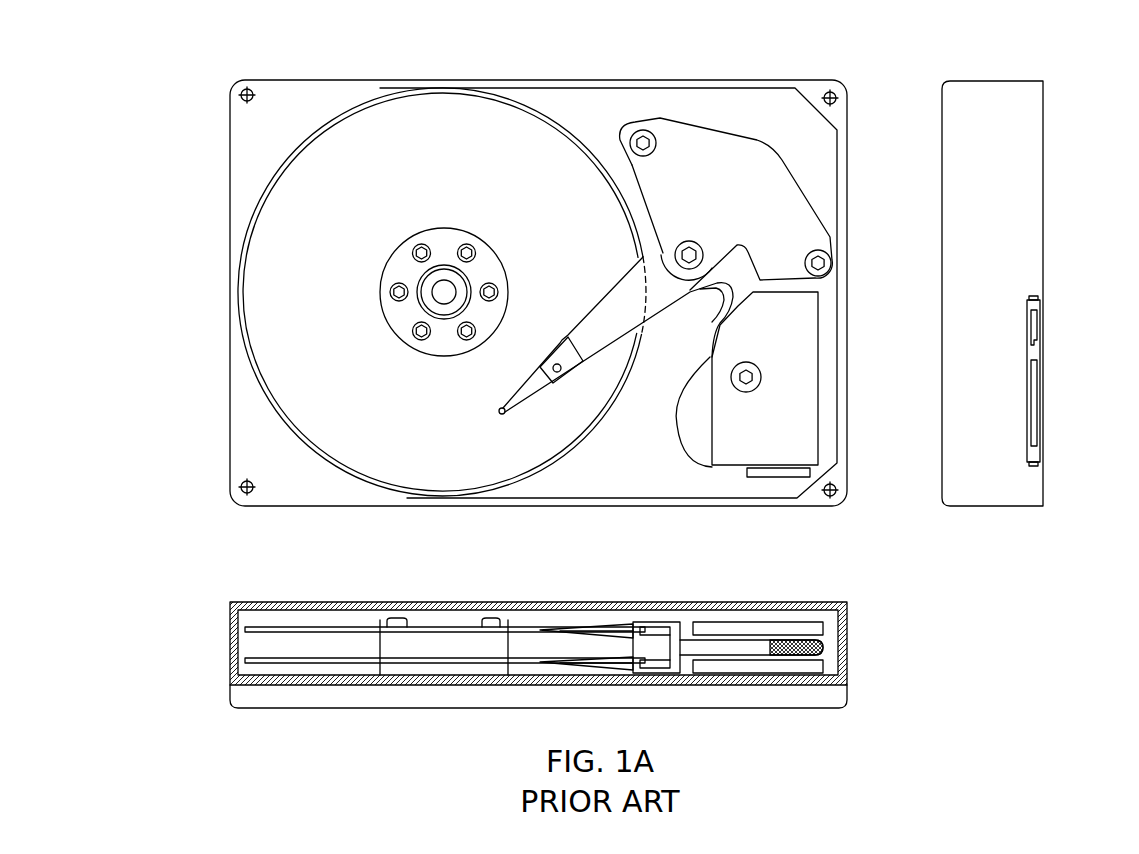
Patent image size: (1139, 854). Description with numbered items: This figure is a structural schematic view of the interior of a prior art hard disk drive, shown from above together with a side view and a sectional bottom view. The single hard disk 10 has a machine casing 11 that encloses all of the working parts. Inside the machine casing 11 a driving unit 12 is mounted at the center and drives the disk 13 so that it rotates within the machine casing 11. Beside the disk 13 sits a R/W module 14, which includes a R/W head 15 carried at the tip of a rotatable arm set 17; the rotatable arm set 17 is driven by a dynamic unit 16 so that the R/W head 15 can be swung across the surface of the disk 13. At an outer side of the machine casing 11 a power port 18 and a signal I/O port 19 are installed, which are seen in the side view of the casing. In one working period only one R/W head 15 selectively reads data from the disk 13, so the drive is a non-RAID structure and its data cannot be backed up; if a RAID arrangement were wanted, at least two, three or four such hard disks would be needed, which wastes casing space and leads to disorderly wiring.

The hard disk 10 is at (214, 271).
The machine casing 11 is at (238, 410).
The driving unit 12 is at (440, 336).
The disk 13 is at (430, 125).
The R/W module 14 is at (768, 132).
The R/W head 15 is at (521, 395).
The dynamic unit 16 is at (790, 212).
The rotatable arm set 17 is at (613, 333).
The power port 18 is at (1037, 400).
The signal I/O port 19 is at (1037, 315).